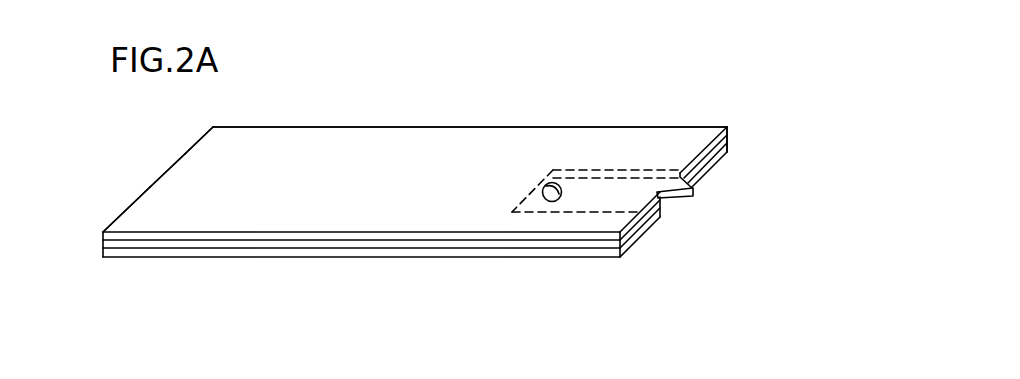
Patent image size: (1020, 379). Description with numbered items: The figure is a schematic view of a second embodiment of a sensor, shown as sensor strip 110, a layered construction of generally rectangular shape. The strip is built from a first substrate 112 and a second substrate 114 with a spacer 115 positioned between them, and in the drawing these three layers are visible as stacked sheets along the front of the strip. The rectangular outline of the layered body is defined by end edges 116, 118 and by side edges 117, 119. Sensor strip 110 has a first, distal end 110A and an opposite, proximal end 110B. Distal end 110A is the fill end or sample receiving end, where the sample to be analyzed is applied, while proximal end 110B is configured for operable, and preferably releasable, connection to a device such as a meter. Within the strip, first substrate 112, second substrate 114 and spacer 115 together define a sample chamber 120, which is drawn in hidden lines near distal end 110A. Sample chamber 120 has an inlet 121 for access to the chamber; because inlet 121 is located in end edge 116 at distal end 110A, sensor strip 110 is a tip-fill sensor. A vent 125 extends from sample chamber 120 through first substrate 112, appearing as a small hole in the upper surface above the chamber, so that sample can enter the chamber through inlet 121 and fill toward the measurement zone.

The sensor strip 110 is at (688, 89).
The distal end 110A is at (640, 235).
The proximal end 110B is at (203, 138).
The first substrate 112 is at (128, 207).
The second substrate 114 is at (103, 248).
The spacer 115 is at (103, 243).
The end edge 116 is at (717, 162).
The side edge 117 is at (362, 257).
The end edge 118 is at (163, 173).
The side edge 119 is at (463, 127).
The sample chamber 120 is at (612, 170).
The inlet 121 is at (668, 204).
The vent 125 is at (549, 201).